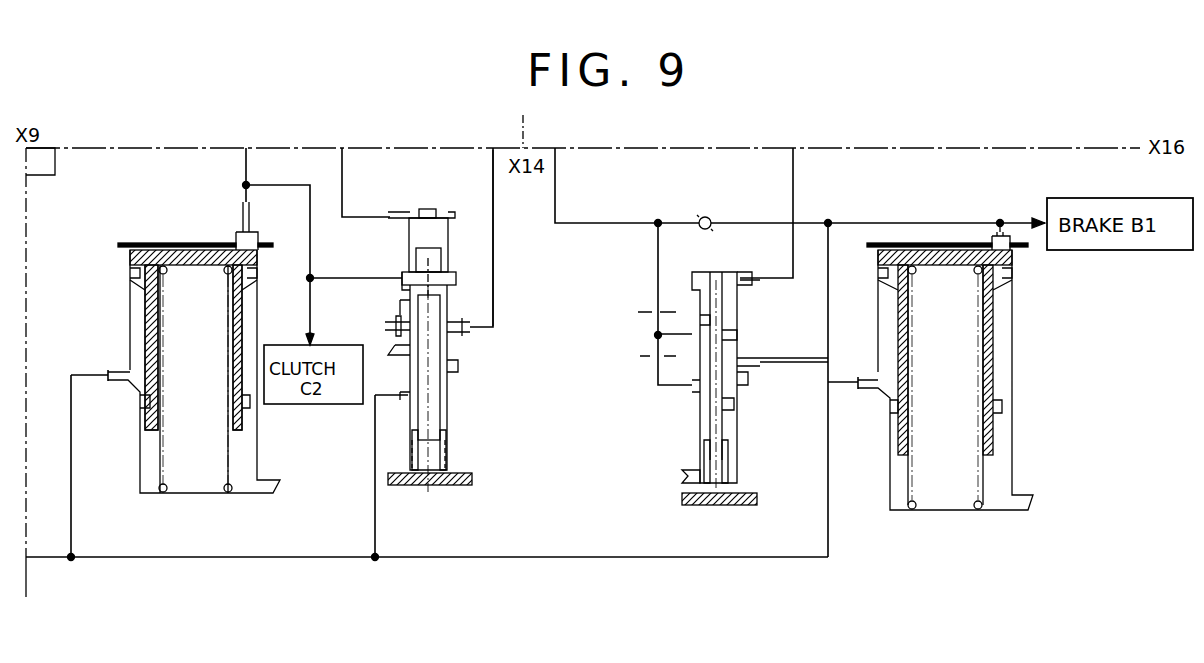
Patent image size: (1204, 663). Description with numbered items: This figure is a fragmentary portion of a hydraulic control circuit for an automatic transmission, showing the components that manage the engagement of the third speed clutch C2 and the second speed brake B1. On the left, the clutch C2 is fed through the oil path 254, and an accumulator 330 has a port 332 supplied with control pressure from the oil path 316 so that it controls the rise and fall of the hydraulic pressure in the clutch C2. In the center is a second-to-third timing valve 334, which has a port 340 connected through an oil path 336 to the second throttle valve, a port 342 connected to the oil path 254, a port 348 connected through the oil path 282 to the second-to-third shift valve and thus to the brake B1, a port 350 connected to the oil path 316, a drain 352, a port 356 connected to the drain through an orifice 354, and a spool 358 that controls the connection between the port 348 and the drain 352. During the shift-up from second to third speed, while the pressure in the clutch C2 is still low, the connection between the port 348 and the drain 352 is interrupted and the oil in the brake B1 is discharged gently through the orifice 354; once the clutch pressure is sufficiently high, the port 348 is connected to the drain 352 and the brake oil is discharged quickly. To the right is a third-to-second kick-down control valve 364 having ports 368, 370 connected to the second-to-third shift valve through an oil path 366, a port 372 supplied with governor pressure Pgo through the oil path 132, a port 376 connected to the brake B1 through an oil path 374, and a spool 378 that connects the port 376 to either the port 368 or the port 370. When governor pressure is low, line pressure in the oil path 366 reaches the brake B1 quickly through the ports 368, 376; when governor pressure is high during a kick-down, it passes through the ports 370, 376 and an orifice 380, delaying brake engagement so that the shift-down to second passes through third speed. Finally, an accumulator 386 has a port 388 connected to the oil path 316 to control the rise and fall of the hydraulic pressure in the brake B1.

The oil path 132 is at (793, 206).
The oil path 254 is at (247, 170).
The oil path 282 is at (493, 243).
The oil path 316 is at (333, 558).
The accumulator 330 is at (190, 243).
The port 332 is at (122, 374).
The 2-3 timing valve 334 is at (432, 212).
The oil path 336 is at (343, 200).
The port 340 is at (421, 305).
The port 342 is at (404, 272).
The port 348 is at (455, 335).
The port 350 is at (405, 398).
The drain 352 is at (402, 348).
The orifice 354 is at (398, 320).
The port 356 is at (407, 300).
The spool 358 is at (450, 366).
The 3-2 kick-down control valve 364 is at (753, 368).
The oil path 366 is at (627, 223).
The port 368 is at (692, 330).
The port 370 is at (698, 395).
The port 372 is at (738, 296).
The oil path 374 is at (828, 340).
The port 376 is at (740, 378).
The spool 378 is at (730, 406).
The orifice 380 is at (645, 357).
The accumulator 386 is at (940, 243).
The port 388 is at (868, 384).